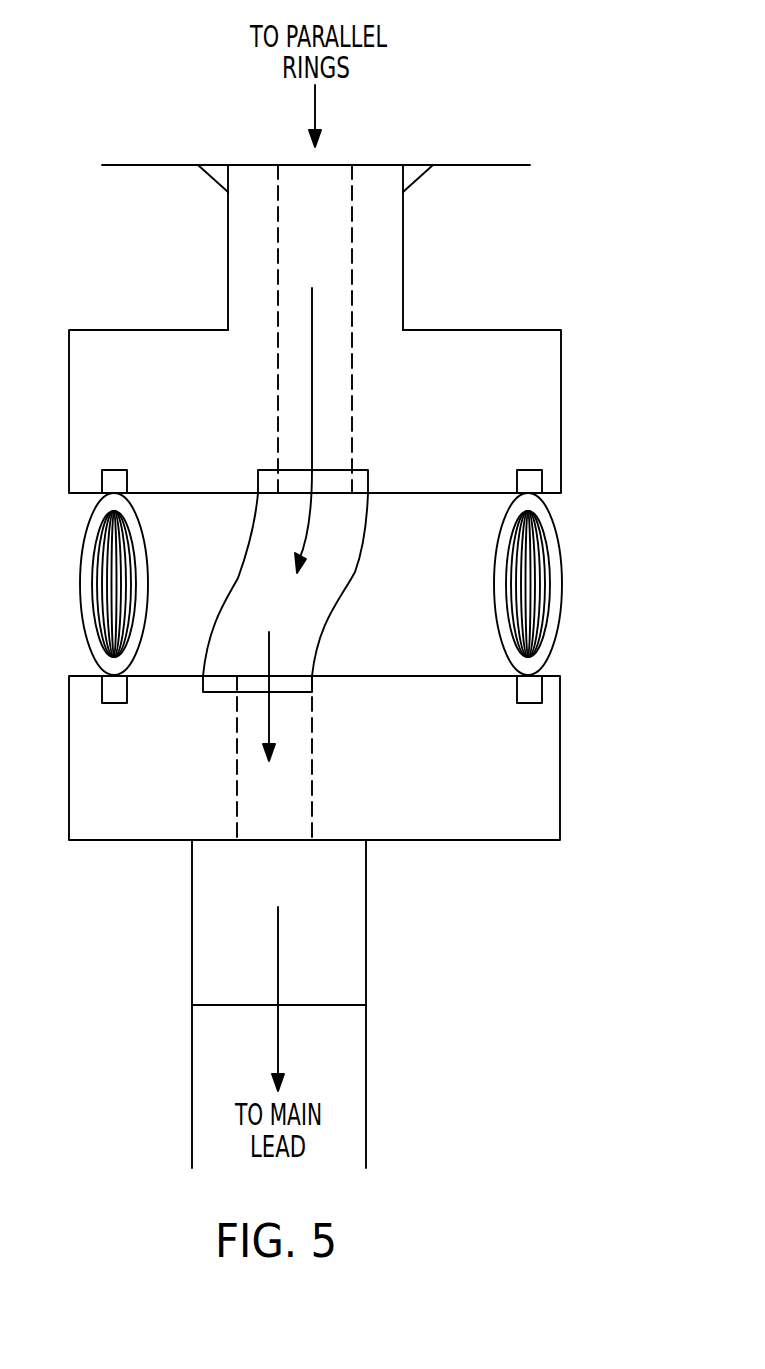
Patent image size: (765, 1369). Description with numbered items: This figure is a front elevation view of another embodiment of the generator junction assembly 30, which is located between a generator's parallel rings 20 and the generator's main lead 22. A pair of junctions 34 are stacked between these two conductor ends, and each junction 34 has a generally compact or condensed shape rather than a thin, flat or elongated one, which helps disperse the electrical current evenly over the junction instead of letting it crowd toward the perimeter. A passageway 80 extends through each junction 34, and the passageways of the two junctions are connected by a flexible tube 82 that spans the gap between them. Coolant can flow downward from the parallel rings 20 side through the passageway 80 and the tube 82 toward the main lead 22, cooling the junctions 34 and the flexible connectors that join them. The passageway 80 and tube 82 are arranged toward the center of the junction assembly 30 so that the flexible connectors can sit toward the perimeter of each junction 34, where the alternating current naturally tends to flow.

The parallel rings 20 is at (316, 100).
The main lead 22 is at (278, 1035).
The junction assembly 30 is at (105, 580).
The junction 34 is at (530, 348).
The passageway 80 is at (335, 225).
The flexible tube 82 is at (365, 540).